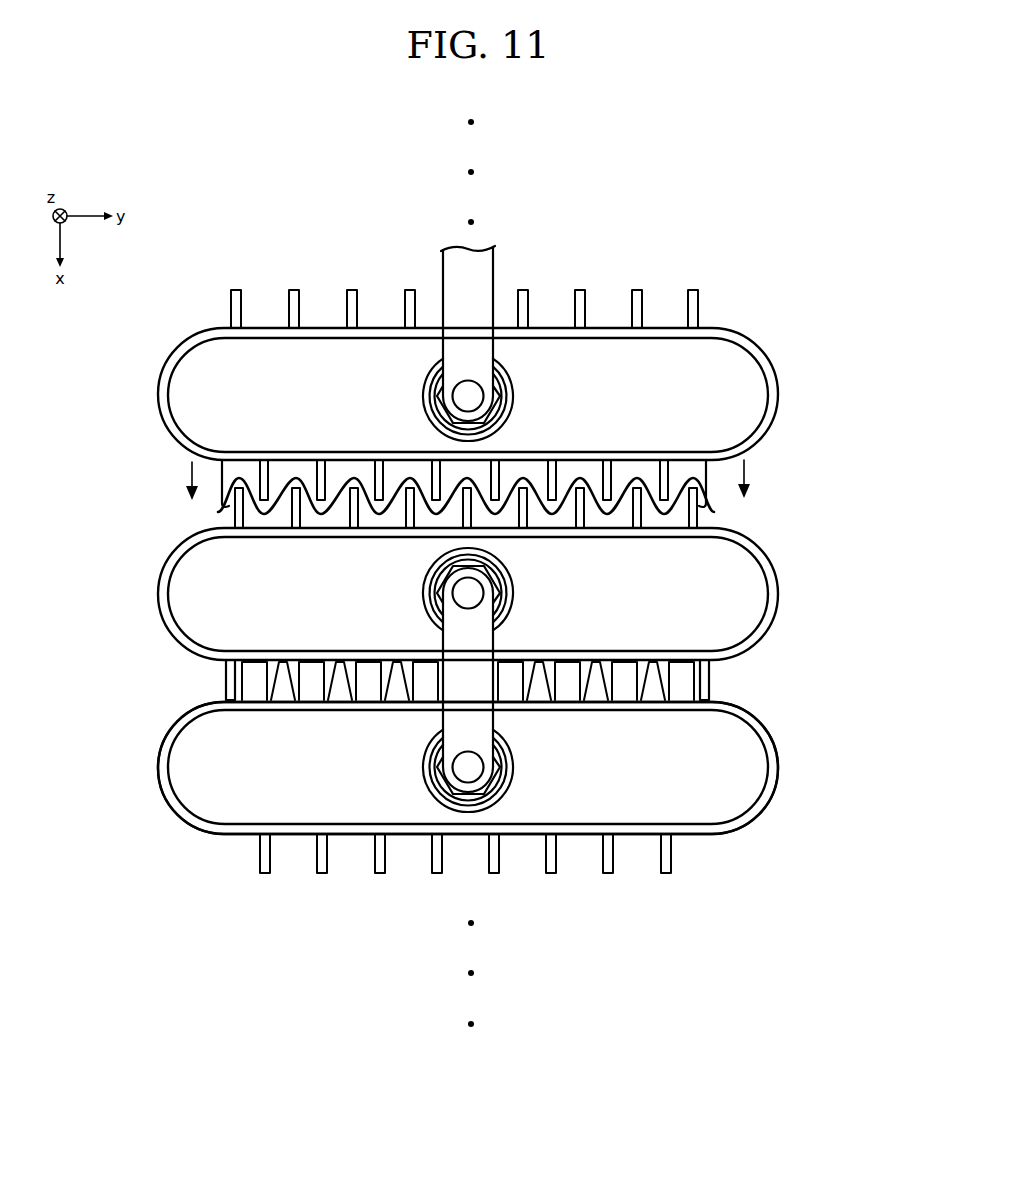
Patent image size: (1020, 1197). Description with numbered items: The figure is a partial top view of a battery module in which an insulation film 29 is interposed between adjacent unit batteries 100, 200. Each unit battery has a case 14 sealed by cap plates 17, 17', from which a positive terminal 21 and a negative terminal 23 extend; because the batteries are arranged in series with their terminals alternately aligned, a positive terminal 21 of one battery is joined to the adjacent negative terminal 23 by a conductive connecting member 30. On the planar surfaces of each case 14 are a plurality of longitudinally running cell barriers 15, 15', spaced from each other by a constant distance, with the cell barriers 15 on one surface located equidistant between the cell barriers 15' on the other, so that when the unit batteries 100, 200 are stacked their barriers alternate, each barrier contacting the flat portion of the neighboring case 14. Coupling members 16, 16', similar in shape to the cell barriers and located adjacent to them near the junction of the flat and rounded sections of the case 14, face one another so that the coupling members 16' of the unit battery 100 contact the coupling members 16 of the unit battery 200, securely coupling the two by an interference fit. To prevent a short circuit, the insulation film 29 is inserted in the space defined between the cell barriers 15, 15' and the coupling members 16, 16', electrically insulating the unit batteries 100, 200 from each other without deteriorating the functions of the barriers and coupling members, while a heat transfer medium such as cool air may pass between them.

The case 14 is at (788, 740).
The cell barrier 15 is at (530, 621).
The cell barrier 15' is at (514, 421).
The coupling member 16 is at (483, 661).
The coupling member 16' is at (476, 660).
The cap plate 17 is at (502, 770).
The cap plate 17' is at (489, 568).
The positive terminal 21 is at (466, 778).
The negative terminal 23 is at (474, 593).
The insulation film 29 is at (706, 513).
The conductive connecting member 30 is at (458, 718).
The unit battery 100 is at (798, 770).
The unit battery 200 is at (790, 562).